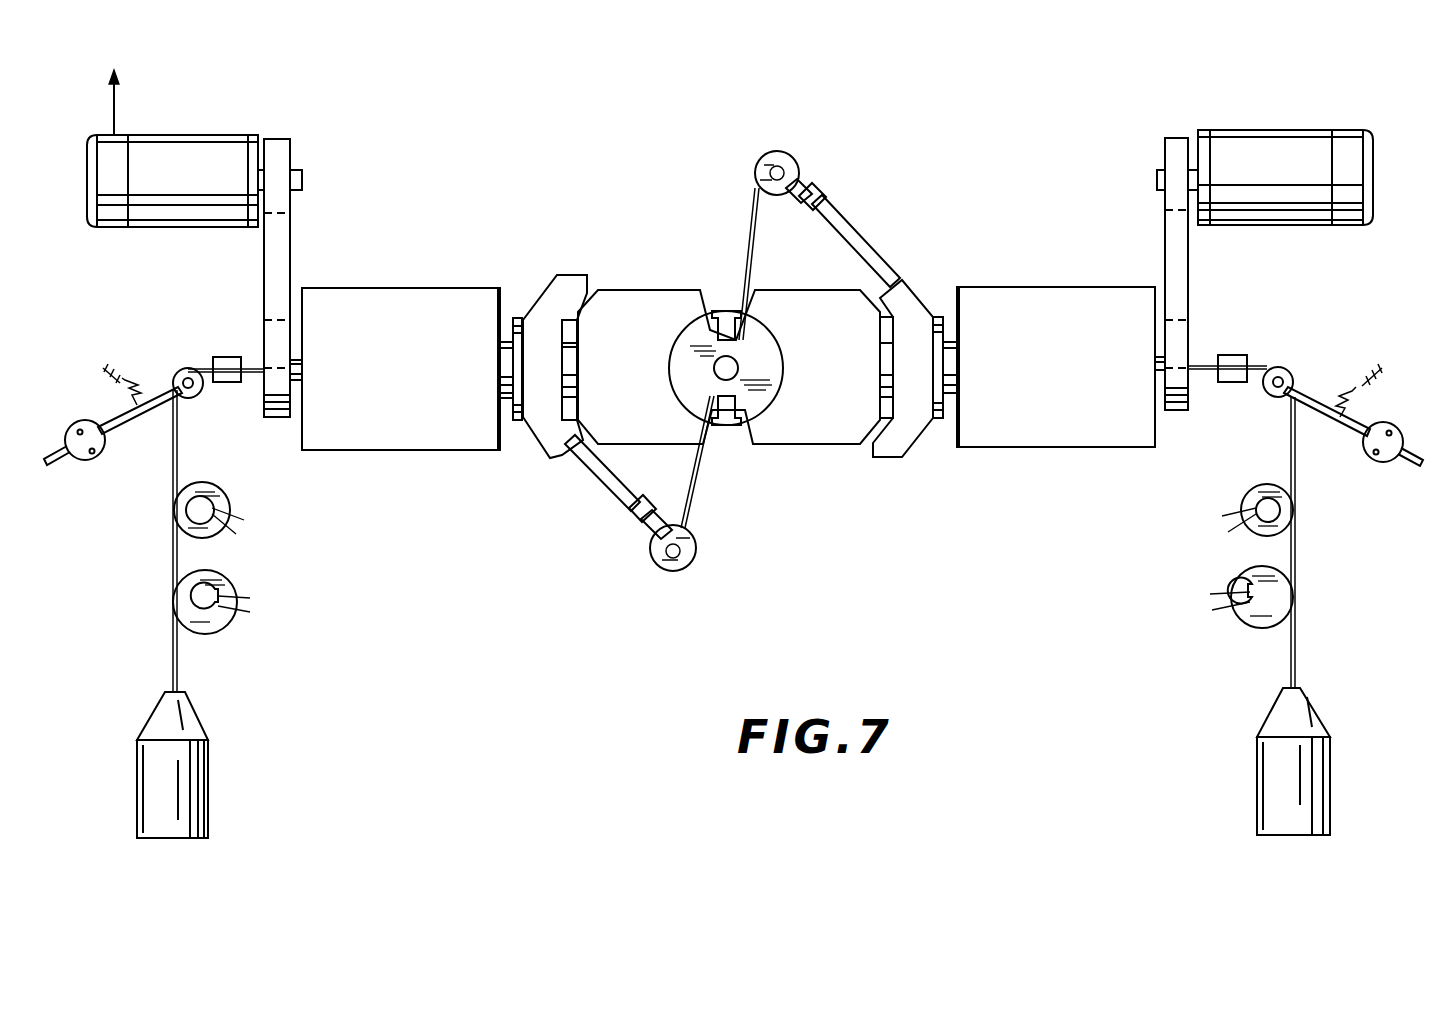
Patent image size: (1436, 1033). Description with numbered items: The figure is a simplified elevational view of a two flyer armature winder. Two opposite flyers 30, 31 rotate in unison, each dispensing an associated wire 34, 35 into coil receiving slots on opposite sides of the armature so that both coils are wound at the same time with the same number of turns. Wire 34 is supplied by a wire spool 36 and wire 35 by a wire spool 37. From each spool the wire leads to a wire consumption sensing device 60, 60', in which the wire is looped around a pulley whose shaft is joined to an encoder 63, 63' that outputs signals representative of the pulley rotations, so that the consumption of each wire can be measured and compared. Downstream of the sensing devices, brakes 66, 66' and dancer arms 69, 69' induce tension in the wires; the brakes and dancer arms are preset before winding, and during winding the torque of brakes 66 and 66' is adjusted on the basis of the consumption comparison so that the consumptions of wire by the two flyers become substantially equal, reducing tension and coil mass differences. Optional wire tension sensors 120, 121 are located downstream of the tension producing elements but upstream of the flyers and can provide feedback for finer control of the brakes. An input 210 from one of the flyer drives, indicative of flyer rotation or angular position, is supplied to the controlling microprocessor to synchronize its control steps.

The input indicative of flyer rotation 210 is at (116, 100).
The flyer 30 is at (593, 493).
The flyer 31 is at (853, 233).
The wire 34 is at (697, 502).
The wire 35 is at (748, 243).
The wire spool 36 is at (200, 790).
The wire spool 37 is at (1322, 783).
The wire consumption sensing device 60 is at (235, 590).
The wire consumption sensing device 60' is at (1288, 597).
The encoder 63 is at (227, 626).
The encoder 63' is at (1226, 624).
The brake 66 is at (232, 506).
The brake 66' is at (1300, 510).
The dancer arm 69 is at (123, 392).
The dancer arm 69' is at (1343, 387).
The wire tension sensor 120 is at (230, 356).
The wire tension sensor 121 is at (1232, 355).